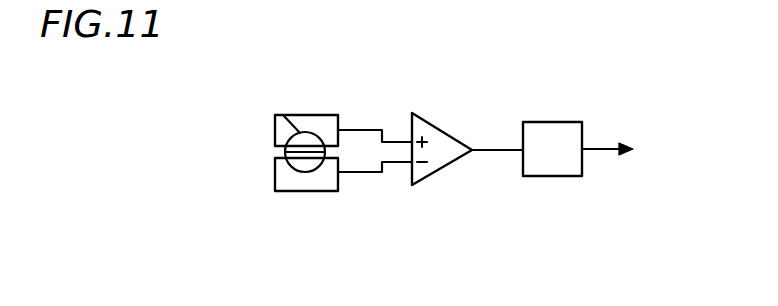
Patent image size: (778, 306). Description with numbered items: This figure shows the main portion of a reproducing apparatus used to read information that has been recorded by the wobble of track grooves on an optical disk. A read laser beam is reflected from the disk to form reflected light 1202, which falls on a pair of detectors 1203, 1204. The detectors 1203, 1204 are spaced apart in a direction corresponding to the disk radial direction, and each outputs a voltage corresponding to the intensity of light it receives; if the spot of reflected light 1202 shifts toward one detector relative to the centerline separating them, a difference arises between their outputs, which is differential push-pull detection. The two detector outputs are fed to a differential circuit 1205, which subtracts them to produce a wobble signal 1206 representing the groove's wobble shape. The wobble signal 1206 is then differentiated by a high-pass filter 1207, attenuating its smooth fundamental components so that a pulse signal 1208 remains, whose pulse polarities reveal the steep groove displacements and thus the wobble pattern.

The reflected light 1202 is at (284, 116).
The detector 1203 is at (287, 150).
The detector 1204 is at (275, 192).
The differential circuit 1205 is at (425, 113).
The wobble signal 1206 is at (488, 152).
The high-pass filter 1207 is at (583, 122).
The pulse signal 1208 is at (638, 149).